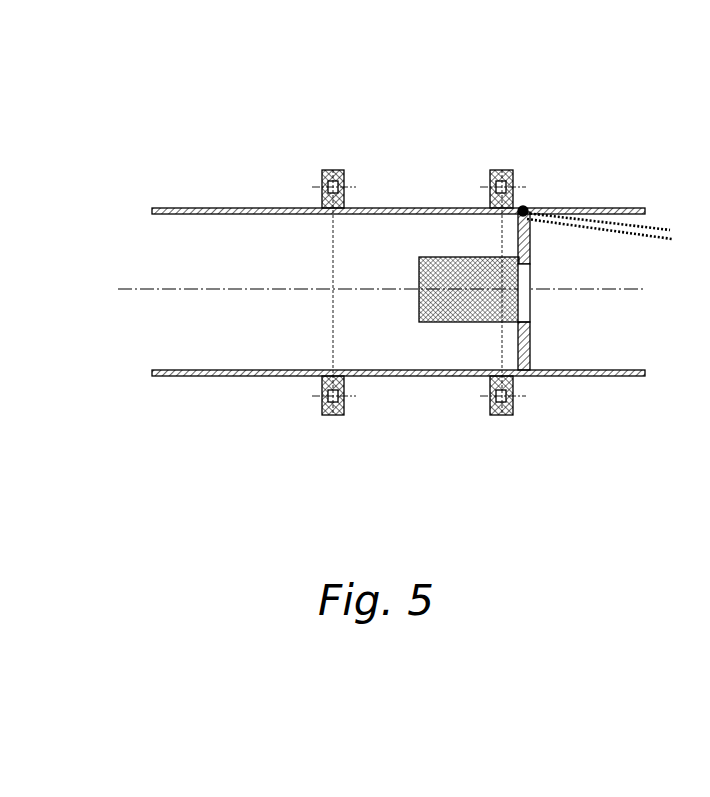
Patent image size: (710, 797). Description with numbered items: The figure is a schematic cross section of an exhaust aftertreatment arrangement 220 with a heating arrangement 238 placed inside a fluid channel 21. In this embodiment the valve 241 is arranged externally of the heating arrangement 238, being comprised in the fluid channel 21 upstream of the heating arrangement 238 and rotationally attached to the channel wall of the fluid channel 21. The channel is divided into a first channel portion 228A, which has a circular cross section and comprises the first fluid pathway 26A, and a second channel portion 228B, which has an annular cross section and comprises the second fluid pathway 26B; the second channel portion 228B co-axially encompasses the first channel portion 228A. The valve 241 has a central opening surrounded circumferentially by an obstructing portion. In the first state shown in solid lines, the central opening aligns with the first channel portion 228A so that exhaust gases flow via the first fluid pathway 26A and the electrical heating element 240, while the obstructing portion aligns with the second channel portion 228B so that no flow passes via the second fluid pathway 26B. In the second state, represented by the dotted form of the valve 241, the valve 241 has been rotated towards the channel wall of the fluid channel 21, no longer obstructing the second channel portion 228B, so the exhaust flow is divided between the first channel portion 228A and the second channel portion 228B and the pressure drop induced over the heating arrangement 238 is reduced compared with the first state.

The fluid channel 21 is at (256, 183).
The first fluid pathway 26A is at (453, 307).
The second fluid pathway 26B is at (470, 229).
The exhaust aftertreatment arrangement 220 is at (593, 145).
The first channel portion 228A is at (492, 281).
The second channel portion 228B is at (494, 348).
The heating arrangement 238 is at (417, 436).
The electrical heating element 240 is at (440, 257).
The valve 241 is at (600, 212).